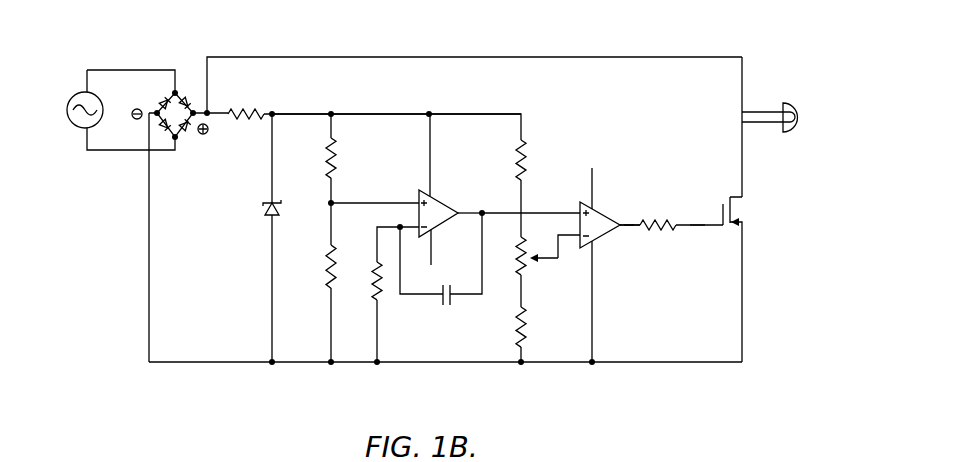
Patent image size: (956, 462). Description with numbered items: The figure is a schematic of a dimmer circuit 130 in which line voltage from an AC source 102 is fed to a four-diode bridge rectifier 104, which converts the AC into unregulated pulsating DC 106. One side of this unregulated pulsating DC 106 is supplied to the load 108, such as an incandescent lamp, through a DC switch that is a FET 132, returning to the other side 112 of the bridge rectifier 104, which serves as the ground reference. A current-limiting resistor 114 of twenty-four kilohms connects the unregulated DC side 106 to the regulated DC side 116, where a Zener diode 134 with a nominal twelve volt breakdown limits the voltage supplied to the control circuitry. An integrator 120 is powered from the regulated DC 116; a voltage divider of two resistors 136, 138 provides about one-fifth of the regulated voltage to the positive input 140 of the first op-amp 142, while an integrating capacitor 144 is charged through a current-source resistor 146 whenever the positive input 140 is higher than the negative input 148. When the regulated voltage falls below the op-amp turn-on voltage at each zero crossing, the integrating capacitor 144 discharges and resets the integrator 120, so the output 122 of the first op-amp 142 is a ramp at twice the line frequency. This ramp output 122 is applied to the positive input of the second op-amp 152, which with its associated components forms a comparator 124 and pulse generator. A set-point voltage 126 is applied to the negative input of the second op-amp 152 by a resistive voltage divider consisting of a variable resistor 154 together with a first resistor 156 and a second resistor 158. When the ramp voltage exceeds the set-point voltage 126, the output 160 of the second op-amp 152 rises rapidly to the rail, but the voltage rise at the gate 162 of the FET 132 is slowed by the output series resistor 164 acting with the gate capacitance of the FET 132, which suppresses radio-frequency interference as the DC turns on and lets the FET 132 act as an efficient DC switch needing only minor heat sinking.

The AC source 102 is at (98, 96).
The bridge rectifier 104 is at (184, 84).
The unregulated pulsating DC 106 is at (393, 57).
The load 108 is at (790, 102).
The other side of the bridge rectifier 112 is at (633, 362).
The current-limiting resistor 114 is at (250, 109).
The regulated DC side 116 is at (385, 114).
The integrator 120 is at (452, 174).
The output of the integrator 122 is at (536, 212).
The comparator 124 is at (616, 184).
The set-point voltage 126 is at (545, 260).
The circuit 130 is at (634, 40).
The FET 132 is at (745, 202).
The Zener diode 134 is at (280, 207).
The resistor 136 is at (338, 158).
The resistor 138 is at (327, 268).
The positive input of the first op-amp 140 is at (385, 203).
The first op-amp 142 is at (444, 207).
The integrating capacitor 144 is at (453, 298).
The current-source resistor 146 is at (370, 285).
The negative input of the first op-amp 148 is at (415, 226).
The second op-amp 152 is at (603, 215).
The variable resistor 154 is at (532, 229).
The first resistor 156 is at (532, 167).
The second resistor 158 is at (532, 330).
The output of the second op-amp 160 is at (629, 226).
The gate 162 is at (698, 226).
The output series resistor 164 is at (662, 218).